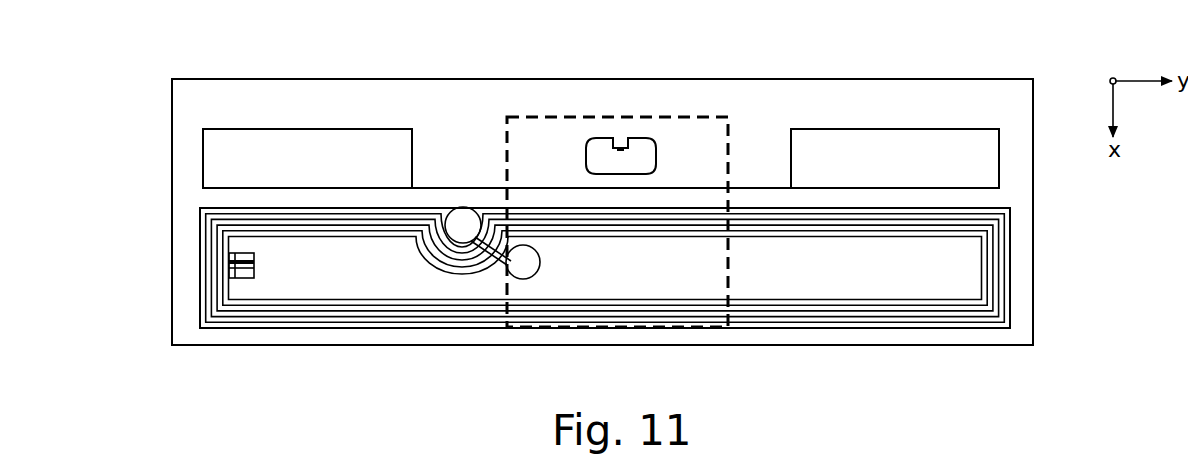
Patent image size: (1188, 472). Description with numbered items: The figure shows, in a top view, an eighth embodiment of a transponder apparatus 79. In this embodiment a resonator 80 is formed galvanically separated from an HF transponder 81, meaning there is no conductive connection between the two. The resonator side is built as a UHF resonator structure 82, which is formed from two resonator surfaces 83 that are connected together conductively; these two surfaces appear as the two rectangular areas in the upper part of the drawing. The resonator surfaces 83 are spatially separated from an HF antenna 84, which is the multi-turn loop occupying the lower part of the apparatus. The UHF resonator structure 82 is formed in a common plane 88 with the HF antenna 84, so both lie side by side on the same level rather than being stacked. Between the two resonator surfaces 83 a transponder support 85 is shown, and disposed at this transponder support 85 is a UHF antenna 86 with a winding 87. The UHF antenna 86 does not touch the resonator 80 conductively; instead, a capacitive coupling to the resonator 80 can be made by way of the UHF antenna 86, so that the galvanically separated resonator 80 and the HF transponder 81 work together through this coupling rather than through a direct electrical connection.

The transponder apparatus 79 is at (133, 95).
The resonator 80 is at (278, 116).
The HF transponder 81 is at (197, 237).
The UHF resonator structure 82 is at (811, 128).
The resonator surfaces 83 is at (363, 138).
The HF antenna 84 is at (413, 329).
The transponder support 85 is at (712, 138).
The UHF antenna 86 is at (595, 130).
The winding 87 is at (632, 138).
The common plane 88 is at (1020, 93).